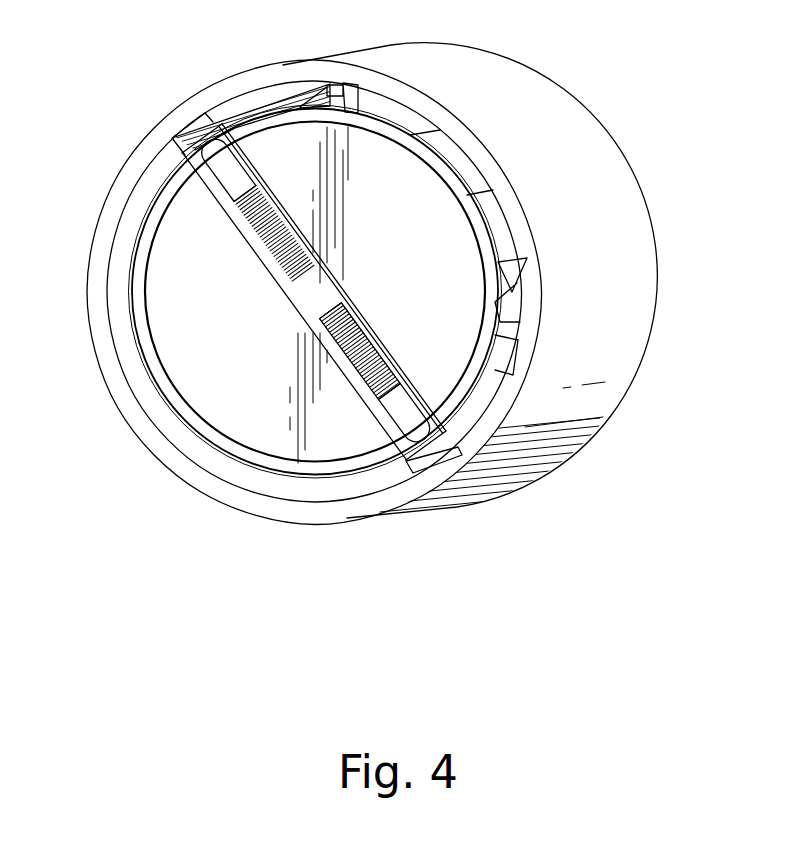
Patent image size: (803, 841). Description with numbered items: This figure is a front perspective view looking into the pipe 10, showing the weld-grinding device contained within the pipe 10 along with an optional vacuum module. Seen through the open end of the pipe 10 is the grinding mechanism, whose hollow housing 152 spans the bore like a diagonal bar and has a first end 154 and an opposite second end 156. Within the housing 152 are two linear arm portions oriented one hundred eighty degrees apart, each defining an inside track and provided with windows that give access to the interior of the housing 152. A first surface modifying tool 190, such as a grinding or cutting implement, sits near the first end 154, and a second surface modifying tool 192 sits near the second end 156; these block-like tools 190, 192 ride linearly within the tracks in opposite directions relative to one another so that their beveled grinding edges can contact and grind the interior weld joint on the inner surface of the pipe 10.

The pipe 10 is at (110, 183).
The housing 152 is at (313, 293).
The first end 154 is at (223, 128).
The second end 156 is at (442, 462).
The first surface modifying tool 190 is at (197, 140).
The second surface modifying tool 192 is at (443, 462).